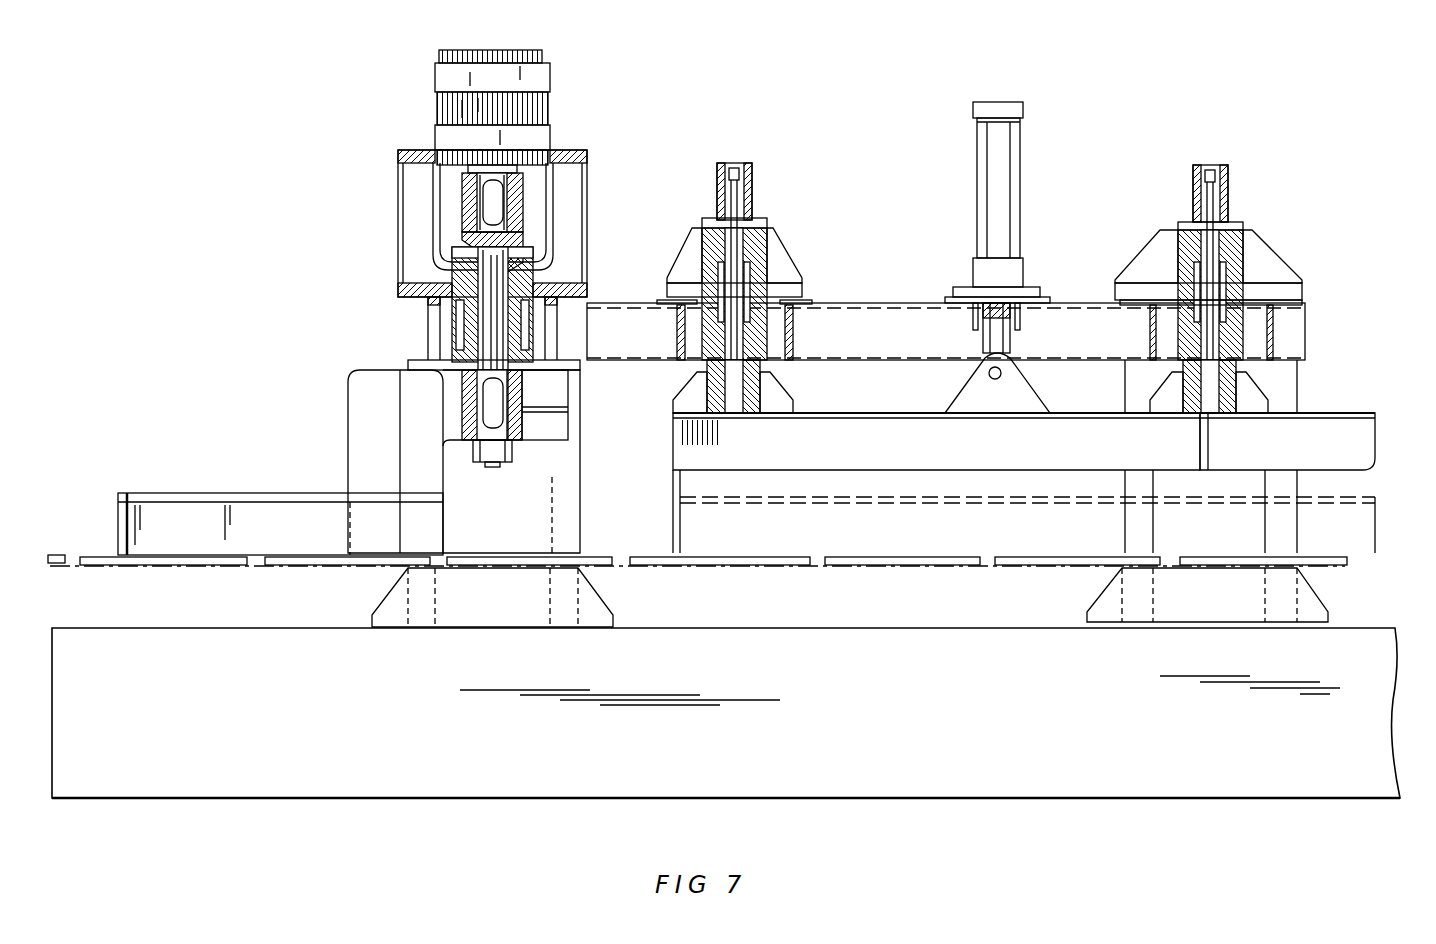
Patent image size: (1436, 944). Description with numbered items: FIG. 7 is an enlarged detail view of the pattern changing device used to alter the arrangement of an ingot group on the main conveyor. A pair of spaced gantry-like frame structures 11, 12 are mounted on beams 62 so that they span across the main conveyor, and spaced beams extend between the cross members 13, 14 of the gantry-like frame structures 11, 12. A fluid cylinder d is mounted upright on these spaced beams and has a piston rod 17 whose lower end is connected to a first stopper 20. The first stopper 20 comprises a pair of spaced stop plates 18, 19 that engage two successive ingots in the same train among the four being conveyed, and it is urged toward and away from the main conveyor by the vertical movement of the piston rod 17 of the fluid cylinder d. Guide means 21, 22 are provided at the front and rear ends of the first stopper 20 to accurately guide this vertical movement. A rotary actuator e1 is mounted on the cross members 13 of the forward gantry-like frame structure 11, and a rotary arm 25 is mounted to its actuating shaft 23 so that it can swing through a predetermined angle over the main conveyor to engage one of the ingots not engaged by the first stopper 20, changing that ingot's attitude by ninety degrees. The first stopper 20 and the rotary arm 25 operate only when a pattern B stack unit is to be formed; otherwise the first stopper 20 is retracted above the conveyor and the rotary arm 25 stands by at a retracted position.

The rotary actuator e1 is at (413, 81).
The fluid cylinder d is at (978, 172).
The actuating shaft 23 is at (535, 280).
The cross members 13 is at (428, 316).
The gantry-like frame structure 11 is at (584, 533).
The rotary arm 25 is at (188, 493).
The guide means 21 is at (696, 340).
The guide means 22 is at (1237, 271).
The cross members 14 is at (1274, 330).
The piston rod 17 is at (986, 300).
The stop plate 18 is at (676, 445).
The rear stop plate 19 is at (1210, 449).
The first stopper 20 is at (880, 413).
The gantry-like frame structure 12 is at (1300, 545).
The beams 62 is at (947, 786).